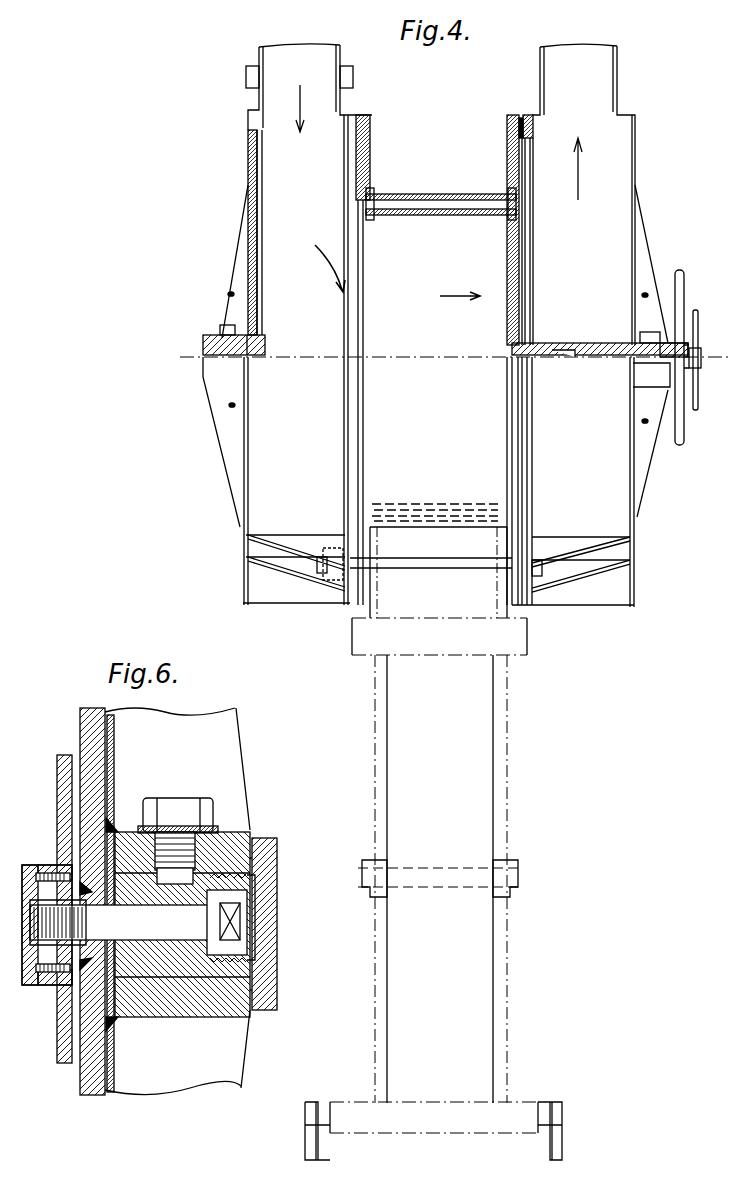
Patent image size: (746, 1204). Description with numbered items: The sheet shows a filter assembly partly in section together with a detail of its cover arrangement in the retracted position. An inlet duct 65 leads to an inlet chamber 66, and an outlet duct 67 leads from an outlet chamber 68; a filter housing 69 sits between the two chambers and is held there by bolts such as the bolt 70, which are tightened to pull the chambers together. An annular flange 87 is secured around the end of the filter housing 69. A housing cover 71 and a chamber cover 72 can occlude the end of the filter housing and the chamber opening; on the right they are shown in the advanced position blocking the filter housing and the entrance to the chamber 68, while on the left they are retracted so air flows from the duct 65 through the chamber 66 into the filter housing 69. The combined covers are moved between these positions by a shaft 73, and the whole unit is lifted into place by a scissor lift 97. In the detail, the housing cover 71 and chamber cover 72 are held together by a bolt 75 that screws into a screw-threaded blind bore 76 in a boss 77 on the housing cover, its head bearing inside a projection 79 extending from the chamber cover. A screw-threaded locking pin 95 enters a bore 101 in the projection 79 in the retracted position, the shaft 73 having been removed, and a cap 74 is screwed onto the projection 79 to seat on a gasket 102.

In FIG. 4, the inlet duct 65 is at (263, 50).
In FIG. 4, the inlet chamber 66 is at (260, 487).
In FIG. 4, the outlet duct 67 is at (606, 90).
In FIG. 4, the outlet chamber 68 is at (618, 513).
In FIG. 4, the filter housing 69 is at (426, 198).
In FIG. 4, the bolt 70 is at (431, 572).
In FIG. 6, the housing cover 71 is at (72, 762).
In FIG. 6, the chamber cover 72 is at (100, 758).
In FIG. 4, the shaft 73 is at (586, 342).
In FIG. 4, the cap 74 is at (201, 341).
In FIG. 6, the cap 74 is at (277, 870).
In FIG. 6, the bolt 75 is at (158, 930).
In FIG. 6, the screw-threaded blind bore 76 is at (46, 980).
In FIG. 6, the boss 77 is at (34, 865).
In FIG. 6, the projection 79 is at (185, 965).
In FIG. 4, the annular flange 87 is at (512, 116).
In FIG. 6, the screw-threaded locking pin 95 is at (192, 812).
In FIG. 4, the scissor lift 97 is at (375, 742).
In FIG. 6, the bore 101 is at (215, 826).
In FIG. 6, the gasket 102 is at (255, 982).